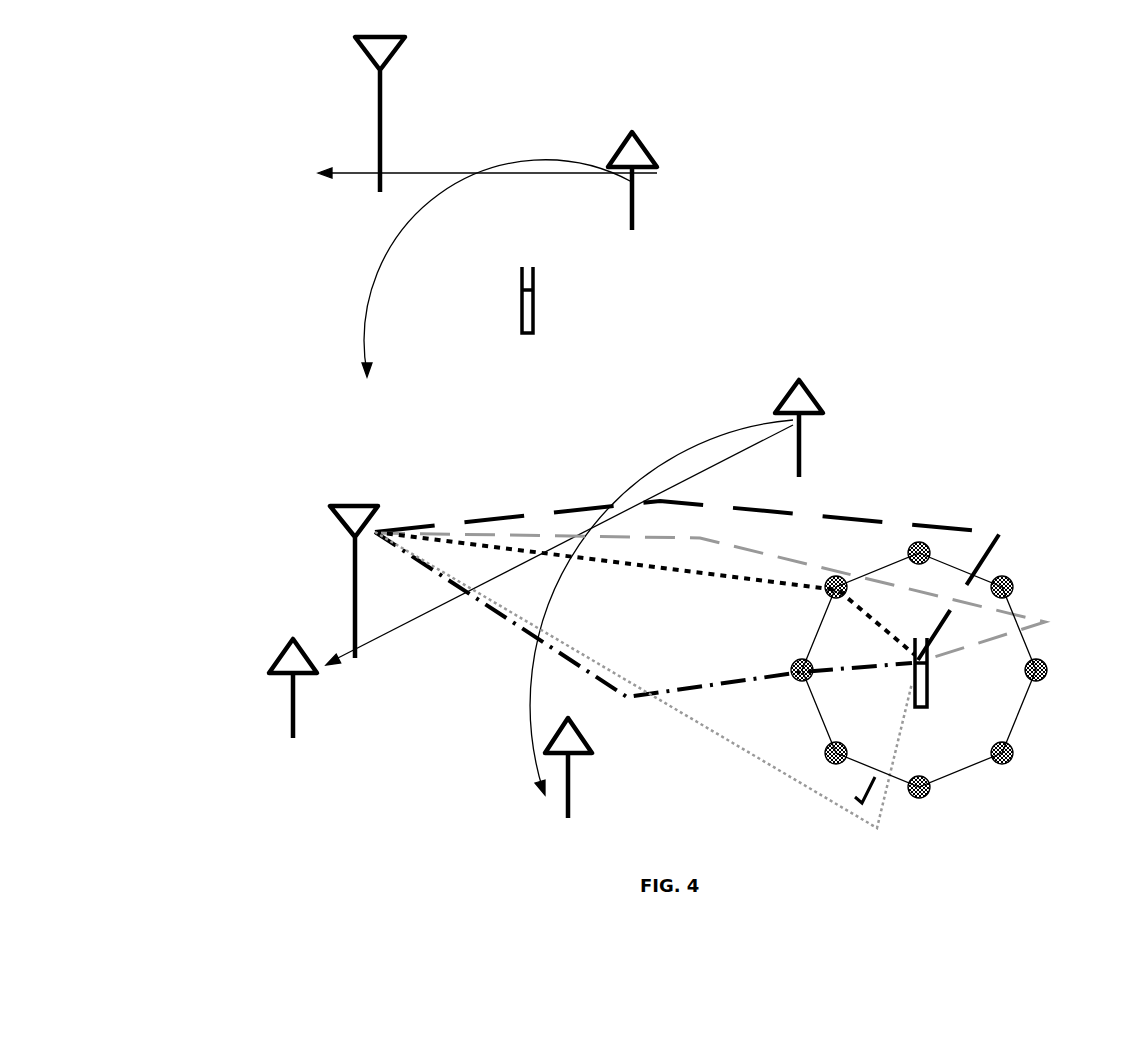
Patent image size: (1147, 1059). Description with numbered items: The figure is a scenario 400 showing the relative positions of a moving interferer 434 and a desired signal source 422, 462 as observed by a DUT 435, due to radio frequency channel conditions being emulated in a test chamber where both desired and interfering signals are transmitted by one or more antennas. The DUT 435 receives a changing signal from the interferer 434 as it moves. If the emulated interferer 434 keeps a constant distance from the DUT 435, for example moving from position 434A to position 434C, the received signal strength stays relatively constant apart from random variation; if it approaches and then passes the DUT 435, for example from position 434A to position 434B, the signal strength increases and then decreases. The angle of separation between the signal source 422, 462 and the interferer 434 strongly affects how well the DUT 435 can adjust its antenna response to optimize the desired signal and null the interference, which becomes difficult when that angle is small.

The beam management diagram 400 is at (1086, 121).
The signal source 422 is at (397, 55).
The moving interferer 434 is at (643, 142).
The interferer position 434A is at (825, 397).
The interferer position 434B is at (283, 650).
The interferer position 434C is at (594, 753).
The DUT 435 is at (533, 305).
The signal source 462 is at (345, 505).